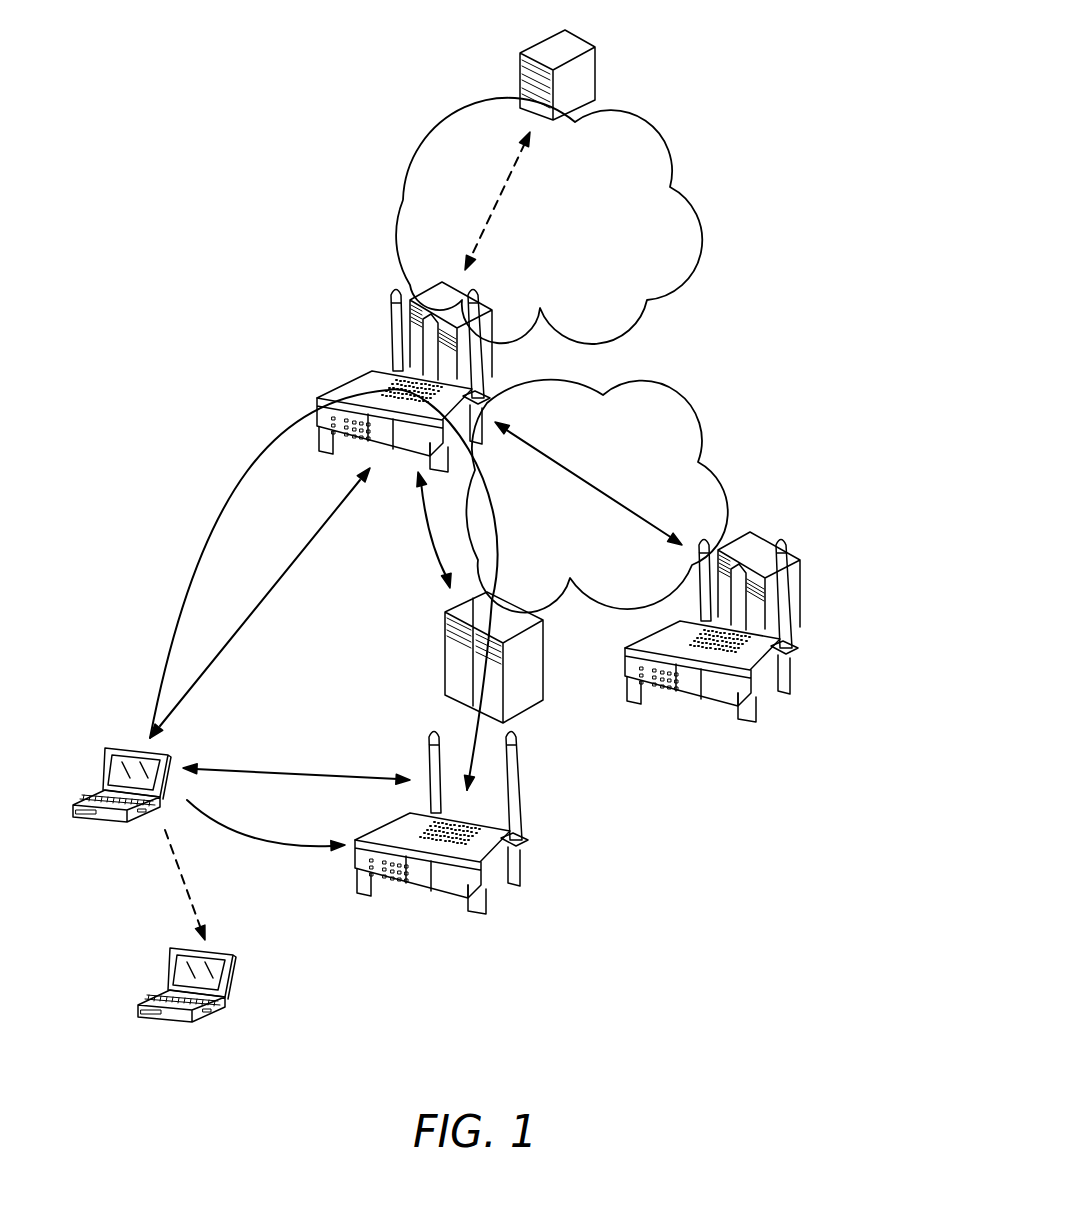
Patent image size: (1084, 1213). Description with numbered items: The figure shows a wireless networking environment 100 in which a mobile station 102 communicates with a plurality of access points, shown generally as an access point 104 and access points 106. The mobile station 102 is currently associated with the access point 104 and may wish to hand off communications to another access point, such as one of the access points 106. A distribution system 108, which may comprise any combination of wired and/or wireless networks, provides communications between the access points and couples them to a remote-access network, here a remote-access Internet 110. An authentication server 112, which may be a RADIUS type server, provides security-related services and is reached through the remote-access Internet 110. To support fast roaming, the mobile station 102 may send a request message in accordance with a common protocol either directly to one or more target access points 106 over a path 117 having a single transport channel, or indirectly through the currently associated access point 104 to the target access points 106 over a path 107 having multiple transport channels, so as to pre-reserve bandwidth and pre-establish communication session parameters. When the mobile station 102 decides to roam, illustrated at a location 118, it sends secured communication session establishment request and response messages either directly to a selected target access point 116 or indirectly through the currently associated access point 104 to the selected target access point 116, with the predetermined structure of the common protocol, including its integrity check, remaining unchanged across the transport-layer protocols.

The wireless networking environment 100 is at (228, 93).
The mobile station 102 is at (118, 748).
The access point 104 is at (438, 286).
The access points 106 is at (787, 667).
The path 107 is at (236, 487).
The distribution system 108 is at (688, 400).
The remote-access Internet 110 is at (690, 197).
The authentication server 112 is at (588, 40).
The selected target access point 116 is at (520, 818).
The path 117 is at (230, 826).
The location 118 is at (128, 982).